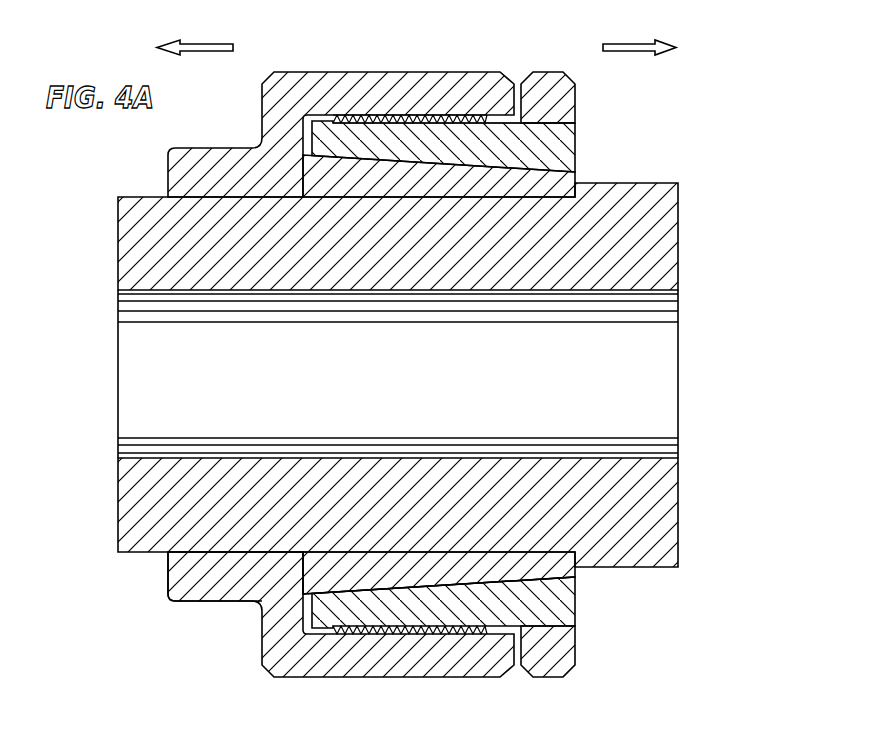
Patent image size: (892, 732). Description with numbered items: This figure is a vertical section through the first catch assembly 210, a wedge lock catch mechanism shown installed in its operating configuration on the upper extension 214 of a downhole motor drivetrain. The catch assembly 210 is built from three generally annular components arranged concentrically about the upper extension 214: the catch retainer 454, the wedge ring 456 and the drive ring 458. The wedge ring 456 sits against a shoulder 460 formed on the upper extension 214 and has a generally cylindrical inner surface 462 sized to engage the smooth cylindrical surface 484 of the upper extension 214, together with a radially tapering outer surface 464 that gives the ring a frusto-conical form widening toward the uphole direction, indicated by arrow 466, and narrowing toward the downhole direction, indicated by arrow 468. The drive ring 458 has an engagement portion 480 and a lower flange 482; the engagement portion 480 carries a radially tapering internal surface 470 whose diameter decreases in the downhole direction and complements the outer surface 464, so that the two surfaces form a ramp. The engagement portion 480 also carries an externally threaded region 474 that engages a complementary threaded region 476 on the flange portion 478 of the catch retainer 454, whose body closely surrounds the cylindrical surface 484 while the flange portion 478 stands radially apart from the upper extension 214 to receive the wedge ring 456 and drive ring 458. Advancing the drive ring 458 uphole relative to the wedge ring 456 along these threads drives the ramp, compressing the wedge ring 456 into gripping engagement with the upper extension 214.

The first catch assembly 210 is at (672, 152).
The upper extension 214 is at (668, 237).
The catch retainer 454 is at (172, 577).
The wedge ring 456 is at (575, 570).
The drive ring 458 is at (550, 664).
The shoulder 460 is at (577, 562).
The inner surface 462 is at (333, 552).
The outer surface 464 is at (490, 163).
The arrow 466 is at (205, 42).
The arrow 468 is at (630, 42).
The internal surface 470 is at (412, 588).
The externally threaded region 474 is at (363, 117).
The threaded region 476 is at (399, 117).
The flange portion 478 is at (311, 402).
The engagement portion 480 is at (440, 133).
The lower flange 482 is at (567, 102).
The cylindrical surface 484 is at (225, 553).